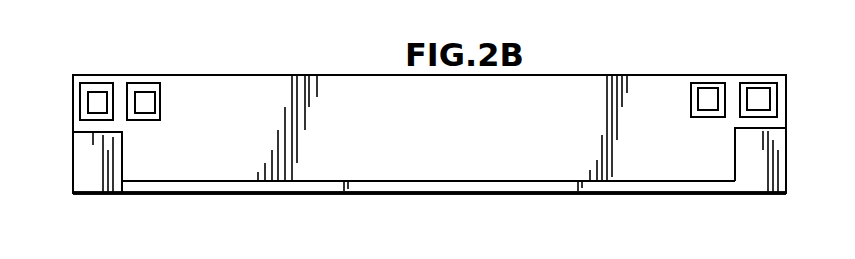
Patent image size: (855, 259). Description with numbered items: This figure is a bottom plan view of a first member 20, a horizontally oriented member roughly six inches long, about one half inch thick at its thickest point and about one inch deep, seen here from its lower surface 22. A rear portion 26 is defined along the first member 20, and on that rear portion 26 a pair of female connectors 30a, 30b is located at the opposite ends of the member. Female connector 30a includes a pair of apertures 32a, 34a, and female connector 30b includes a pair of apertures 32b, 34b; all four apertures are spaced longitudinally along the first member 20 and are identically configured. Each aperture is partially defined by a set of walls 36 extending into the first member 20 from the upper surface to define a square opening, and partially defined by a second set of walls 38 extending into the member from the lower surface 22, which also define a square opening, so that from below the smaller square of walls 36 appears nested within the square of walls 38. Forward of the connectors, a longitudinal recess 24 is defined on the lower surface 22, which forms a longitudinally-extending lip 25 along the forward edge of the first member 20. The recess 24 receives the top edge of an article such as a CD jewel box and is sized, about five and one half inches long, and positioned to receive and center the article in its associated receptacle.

The first member 20 is at (69, 67).
The lower surface 22 is at (469, 137).
The longitudinal recess 24 is at (122, 160).
The longitudinally-extending lip 25 is at (543, 193).
The rear portion 26 is at (368, 75).
The female connector 30a is at (782, 55).
The female connector 30b is at (127, 46).
The aperture 32a is at (770, 98).
The aperture 32b is at (82, 115).
The aperture 34a is at (703, 117).
The aperture 34b is at (157, 115).
The set of walls 36 is at (712, 89).
The second set of walls 38 is at (697, 98).